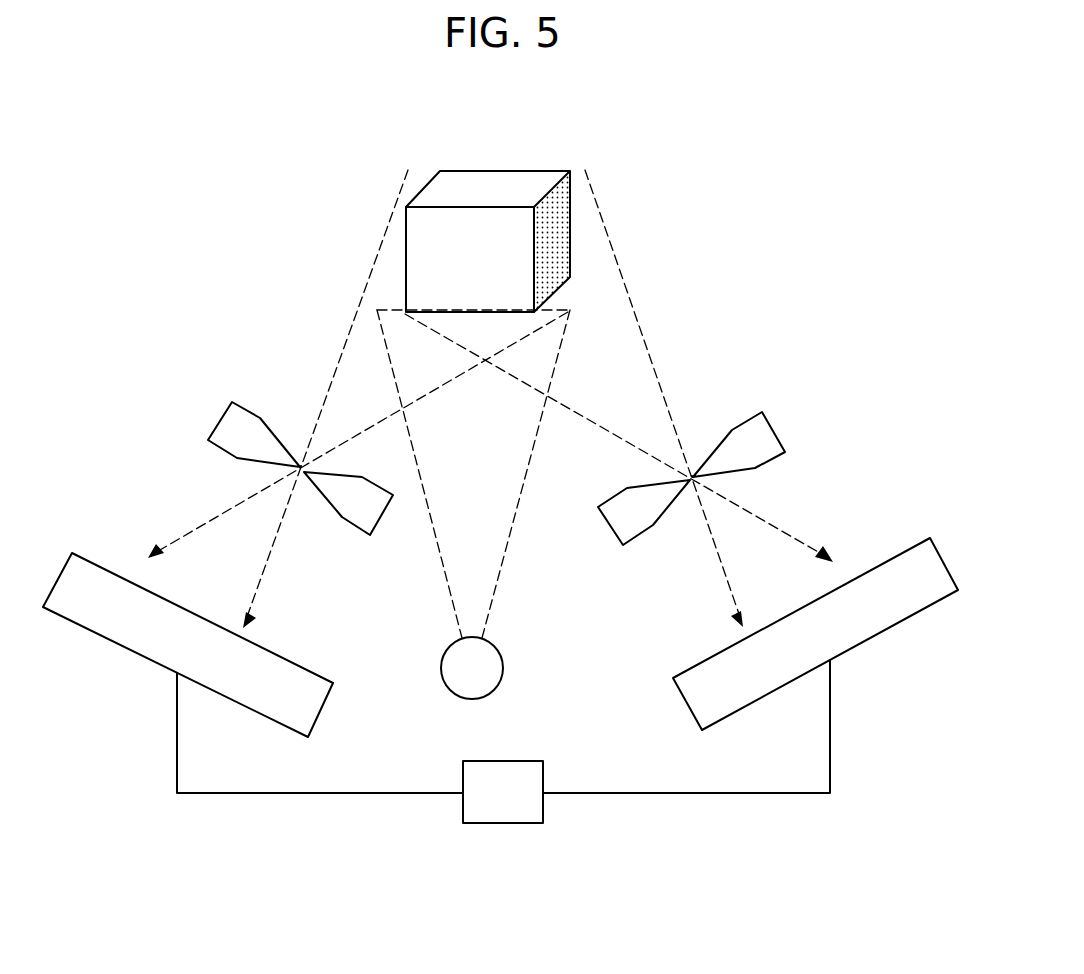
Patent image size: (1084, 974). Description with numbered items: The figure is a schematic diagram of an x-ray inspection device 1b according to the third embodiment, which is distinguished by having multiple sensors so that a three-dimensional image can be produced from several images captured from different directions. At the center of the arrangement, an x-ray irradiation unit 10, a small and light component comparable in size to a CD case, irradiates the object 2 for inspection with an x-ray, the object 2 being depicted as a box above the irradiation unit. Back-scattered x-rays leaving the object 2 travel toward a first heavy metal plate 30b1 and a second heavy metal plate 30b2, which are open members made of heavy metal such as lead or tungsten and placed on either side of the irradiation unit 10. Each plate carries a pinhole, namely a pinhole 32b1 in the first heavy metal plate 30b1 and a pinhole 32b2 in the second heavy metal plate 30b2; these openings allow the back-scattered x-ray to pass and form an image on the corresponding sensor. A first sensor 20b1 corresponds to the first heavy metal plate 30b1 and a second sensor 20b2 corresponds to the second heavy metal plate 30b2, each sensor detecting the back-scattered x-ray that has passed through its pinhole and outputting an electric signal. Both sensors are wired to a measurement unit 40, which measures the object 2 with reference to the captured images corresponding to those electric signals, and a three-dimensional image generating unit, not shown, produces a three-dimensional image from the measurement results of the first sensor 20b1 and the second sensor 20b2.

The x-ray inspection device 1b is at (815, 213).
The object for inspection 2 is at (534, 171).
The x-ray irradiation unit 10 is at (496, 648).
The first sensor 20b1 is at (300, 664).
The second sensor 20b2 is at (694, 666).
The first heavy metal plate 30b1 is at (228, 412).
The second heavy metal plate 30b2 is at (772, 426).
The pinhole 32b1 is at (300, 465).
The pinhole 32b2 is at (695, 470).
The measurement unit 40 is at (496, 761).